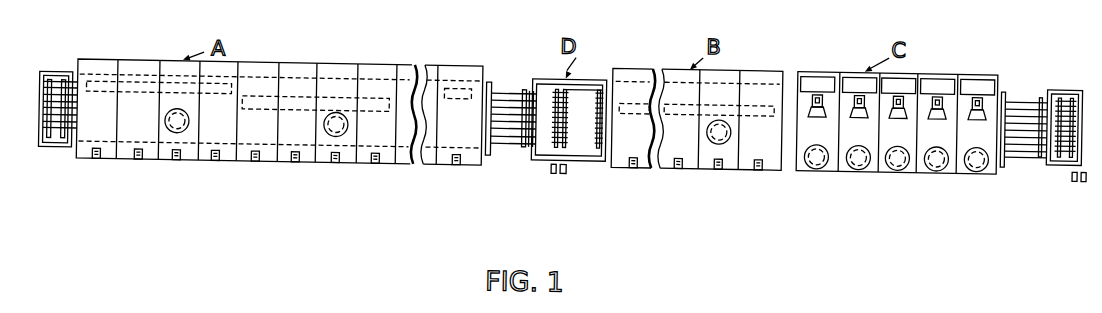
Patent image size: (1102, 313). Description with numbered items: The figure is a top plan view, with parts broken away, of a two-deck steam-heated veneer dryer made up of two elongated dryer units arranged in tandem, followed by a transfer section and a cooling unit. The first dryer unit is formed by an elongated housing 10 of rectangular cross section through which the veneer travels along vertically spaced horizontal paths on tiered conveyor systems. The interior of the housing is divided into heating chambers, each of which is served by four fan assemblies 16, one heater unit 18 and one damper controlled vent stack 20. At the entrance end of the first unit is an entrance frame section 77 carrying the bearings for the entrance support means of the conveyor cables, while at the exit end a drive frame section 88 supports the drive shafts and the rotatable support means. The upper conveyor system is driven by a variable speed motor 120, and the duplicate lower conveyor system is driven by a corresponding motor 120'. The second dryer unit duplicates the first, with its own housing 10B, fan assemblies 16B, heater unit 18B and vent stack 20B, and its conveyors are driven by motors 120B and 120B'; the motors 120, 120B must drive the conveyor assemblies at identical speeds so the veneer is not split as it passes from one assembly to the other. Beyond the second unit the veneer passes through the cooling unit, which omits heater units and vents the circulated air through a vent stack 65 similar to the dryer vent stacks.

The entrance frame section 77 is at (57, 72).
The housing 10 is at (389, 158).
The heater unit 18 is at (268, 94).
The fan assemblies 16 is at (111, 160).
The damper controlled vent stack 20 is at (183, 131).
The drive frame section 88 is at (537, 71).
The variable speed motor 120' is at (527, 181).
The variable speed motor 120 is at (590, 182).
The housing 10B is at (688, 158).
The heater unit 18B is at (668, 90).
The fan assemblies 16B is at (763, 158).
The damper controlled vent stack 20B is at (723, 133).
The vent stack 65 is at (980, 158).
The variable speed motor 120B' is at (1038, 190).
The variable speed motor 120B is at (1060, 206).